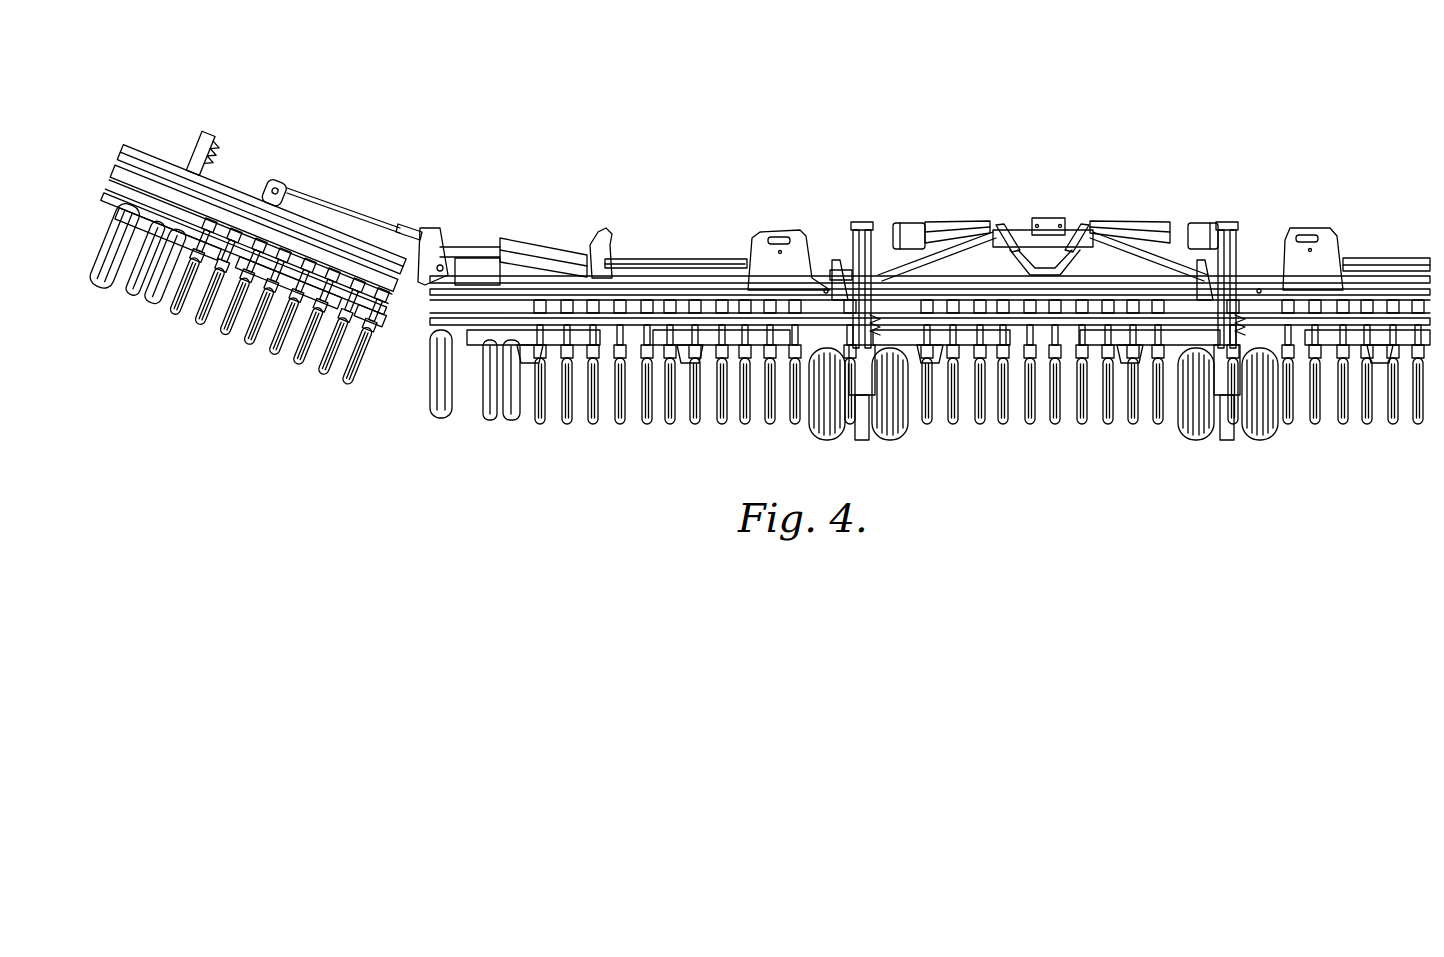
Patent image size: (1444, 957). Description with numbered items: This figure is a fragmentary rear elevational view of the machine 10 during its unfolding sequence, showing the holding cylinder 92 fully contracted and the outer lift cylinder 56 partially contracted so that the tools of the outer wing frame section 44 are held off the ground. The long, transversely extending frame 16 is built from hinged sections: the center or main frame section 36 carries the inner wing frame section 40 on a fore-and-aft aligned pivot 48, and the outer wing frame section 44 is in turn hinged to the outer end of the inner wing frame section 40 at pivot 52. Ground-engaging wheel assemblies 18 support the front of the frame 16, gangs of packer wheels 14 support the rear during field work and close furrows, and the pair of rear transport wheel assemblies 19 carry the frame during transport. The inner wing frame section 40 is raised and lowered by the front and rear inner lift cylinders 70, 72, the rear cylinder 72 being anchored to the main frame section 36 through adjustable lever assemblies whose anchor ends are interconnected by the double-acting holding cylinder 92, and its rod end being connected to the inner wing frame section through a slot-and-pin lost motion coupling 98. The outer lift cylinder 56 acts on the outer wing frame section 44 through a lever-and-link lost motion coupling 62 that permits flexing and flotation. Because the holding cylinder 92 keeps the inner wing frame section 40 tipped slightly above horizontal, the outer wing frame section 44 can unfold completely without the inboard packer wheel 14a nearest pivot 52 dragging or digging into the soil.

The machine 10 is at (546, 143).
The packer wheels 14 is at (266, 297).
The packer wheel 14a is at (364, 337).
The frame 16 is at (138, 150).
The ground-engaging wheel assemblies 18 is at (113, 293).
The rear transport wheel assemblies 19 is at (893, 436).
The main frame section 36 is at (1004, 137).
The inner wing frame section 40 is at (668, 258).
The outer wing frame section 44 is at (260, 216).
The pivot 48 is at (826, 290).
The pivot 52 is at (440, 255).
The outer lift cylinder 56 is at (530, 250).
The lost motion coupling 62 is at (418, 222).
The inner lift cylinder 70 is at (902, 240).
The inner lift cylinder 72 is at (947, 226).
The holding cylinder 92 is at (1050, 218).
The lost motion coupling 98 is at (782, 228).